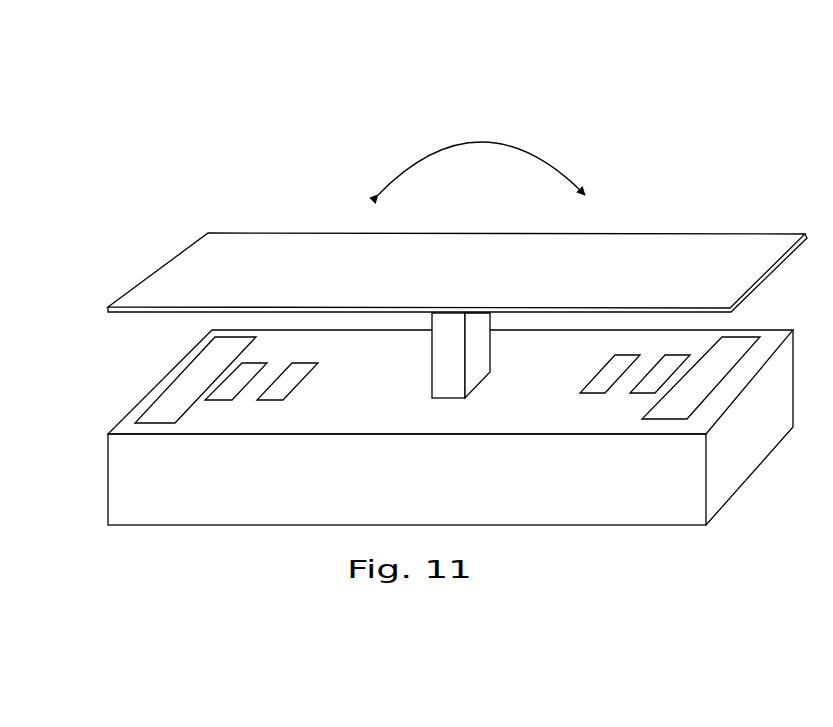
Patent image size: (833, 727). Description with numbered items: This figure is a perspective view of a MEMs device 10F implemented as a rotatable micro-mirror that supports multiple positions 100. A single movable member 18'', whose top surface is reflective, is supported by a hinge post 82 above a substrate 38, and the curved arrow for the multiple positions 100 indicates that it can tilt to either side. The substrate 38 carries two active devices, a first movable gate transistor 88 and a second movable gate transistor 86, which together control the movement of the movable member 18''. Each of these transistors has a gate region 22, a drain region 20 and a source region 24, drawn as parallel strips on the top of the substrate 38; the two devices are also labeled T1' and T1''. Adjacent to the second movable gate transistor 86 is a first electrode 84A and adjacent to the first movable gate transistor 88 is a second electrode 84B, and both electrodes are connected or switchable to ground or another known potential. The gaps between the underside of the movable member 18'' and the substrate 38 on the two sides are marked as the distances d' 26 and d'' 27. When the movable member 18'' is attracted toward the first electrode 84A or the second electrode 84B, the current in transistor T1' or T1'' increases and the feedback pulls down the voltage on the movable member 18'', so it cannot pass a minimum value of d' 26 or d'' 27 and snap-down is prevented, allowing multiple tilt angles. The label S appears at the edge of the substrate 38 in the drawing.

The movable member 18'' is at (457, 236).
The substrate 38 is at (742, 457).
The hinge post 82 is at (432, 377).
The first electrode 84A is at (168, 387).
The second electrode 84B is at (687, 398).
The gate region 22 is at (257, 428).
The drain region 20 is at (290, 390).
The source region 24 is at (218, 400).
The transistor T1' is at (286, 415).
The transistor T1'' is at (566, 412).
The distance d' 26 is at (278, 316).
The distance d'' 27 is at (642, 315).
The second movable gate transistor 86 is at (242, 436).
The first movable gate transistor 88 is at (595, 434).
The multiple positions 100 is at (472, 142).
The MEMs device 10F is at (732, 215).
The substrate S is at (832, 478).